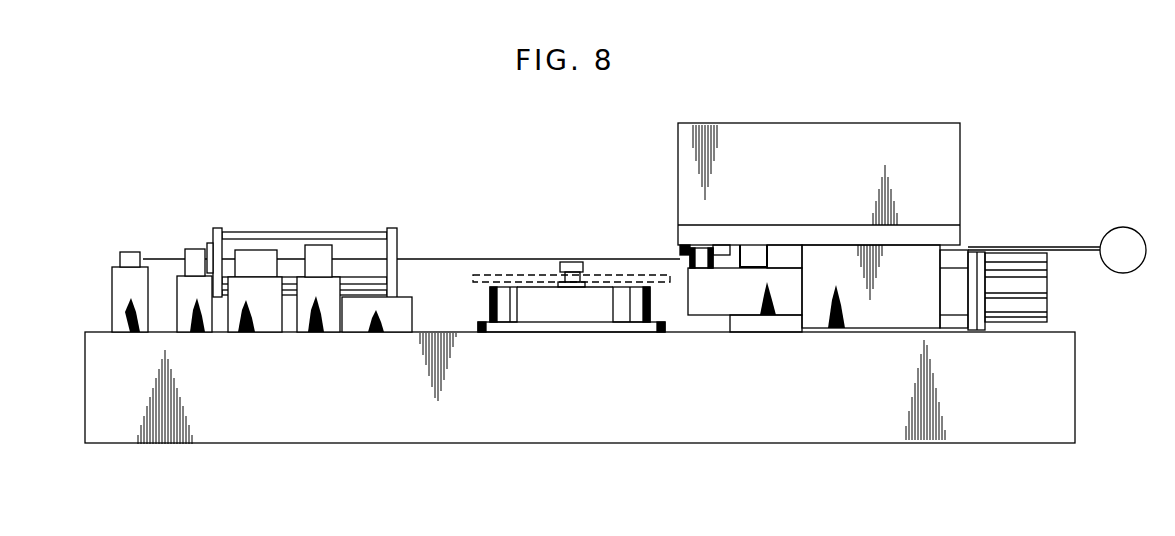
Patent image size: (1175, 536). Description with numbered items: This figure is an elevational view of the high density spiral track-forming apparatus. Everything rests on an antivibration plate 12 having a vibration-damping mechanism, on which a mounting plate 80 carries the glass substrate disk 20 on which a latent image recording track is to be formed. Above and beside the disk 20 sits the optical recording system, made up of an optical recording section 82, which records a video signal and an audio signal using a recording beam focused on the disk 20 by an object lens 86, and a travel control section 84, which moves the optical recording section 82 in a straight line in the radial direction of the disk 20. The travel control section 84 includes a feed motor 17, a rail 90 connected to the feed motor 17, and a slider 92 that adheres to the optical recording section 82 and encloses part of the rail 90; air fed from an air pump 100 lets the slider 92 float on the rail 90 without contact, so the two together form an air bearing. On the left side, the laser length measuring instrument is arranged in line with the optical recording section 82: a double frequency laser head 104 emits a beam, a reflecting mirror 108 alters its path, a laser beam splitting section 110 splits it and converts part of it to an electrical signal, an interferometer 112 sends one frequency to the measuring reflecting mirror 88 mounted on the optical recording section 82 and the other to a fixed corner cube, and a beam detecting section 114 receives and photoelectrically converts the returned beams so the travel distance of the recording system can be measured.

The antivibration plate 12 is at (627, 443).
The feed motor 17 is at (1042, 296).
The disk 20 is at (507, 275).
The mounting plate 80 is at (529, 322).
The optical recording section 82 is at (833, 181).
The travel control section 84 is at (972, 240).
The object lens 86 is at (680, 252).
The reflecting mirror 88 is at (757, 255).
The rail 90 is at (706, 315).
The slider 92 is at (815, 328).
The air pump 100 is at (1141, 228).
The laser head 104 is at (261, 240).
The reflecting mirror 108 is at (129, 252).
The laser beam splitting section 110 is at (193, 249).
The interferometer 112 is at (318, 245).
The beam detecting section 114 is at (258, 277).